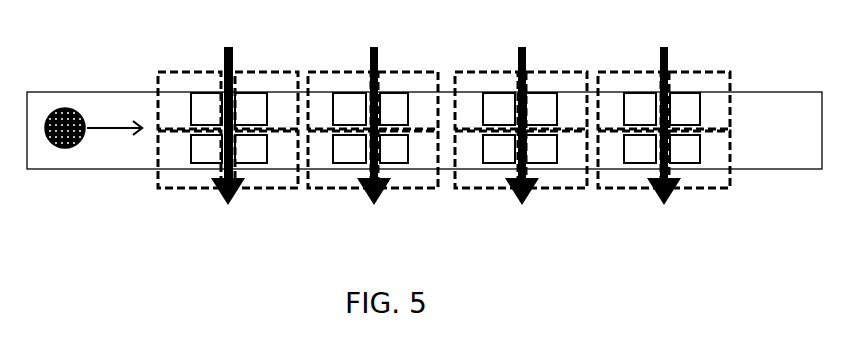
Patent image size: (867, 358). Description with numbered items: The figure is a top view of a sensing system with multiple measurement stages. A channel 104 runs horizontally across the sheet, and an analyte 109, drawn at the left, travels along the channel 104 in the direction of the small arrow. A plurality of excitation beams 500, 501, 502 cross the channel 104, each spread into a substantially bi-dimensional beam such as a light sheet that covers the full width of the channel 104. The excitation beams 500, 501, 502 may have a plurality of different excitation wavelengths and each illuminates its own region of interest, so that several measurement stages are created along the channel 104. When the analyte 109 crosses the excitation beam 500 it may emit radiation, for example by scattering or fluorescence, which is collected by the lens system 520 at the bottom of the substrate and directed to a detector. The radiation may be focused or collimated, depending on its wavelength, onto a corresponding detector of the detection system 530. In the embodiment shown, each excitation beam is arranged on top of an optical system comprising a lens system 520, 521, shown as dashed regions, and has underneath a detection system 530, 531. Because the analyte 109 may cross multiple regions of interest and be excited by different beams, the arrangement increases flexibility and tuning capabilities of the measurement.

The channel 104 is at (804, 142).
The analyte 109 is at (71, 144).
The excitation beam 500 is at (227, 53).
The excitation beam 501 is at (373, 203).
The excitation beam 502 is at (521, 197).
The lens system 520 is at (182, 107).
The lens system 521 is at (422, 153).
The detection system 530 is at (287, 60).
The detection system 531 is at (418, 58).